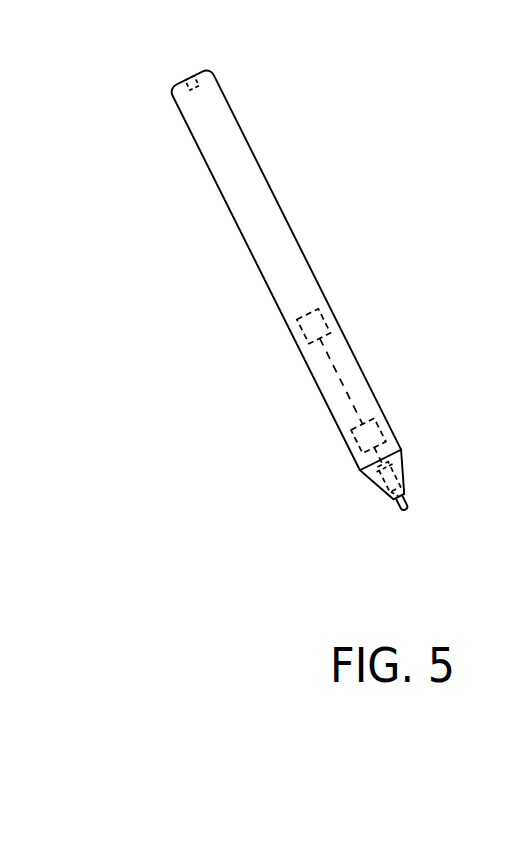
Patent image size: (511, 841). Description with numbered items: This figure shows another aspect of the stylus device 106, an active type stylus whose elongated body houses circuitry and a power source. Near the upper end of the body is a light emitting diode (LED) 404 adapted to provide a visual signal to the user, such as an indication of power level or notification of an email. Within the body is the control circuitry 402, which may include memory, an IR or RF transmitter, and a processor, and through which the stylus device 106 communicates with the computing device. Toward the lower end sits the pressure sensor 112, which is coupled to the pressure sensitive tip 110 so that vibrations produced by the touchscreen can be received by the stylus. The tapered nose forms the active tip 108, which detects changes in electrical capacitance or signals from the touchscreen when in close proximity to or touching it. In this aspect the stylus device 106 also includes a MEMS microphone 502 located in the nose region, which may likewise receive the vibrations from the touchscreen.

The stylus device 106 is at (250, 167).
The active tip 108 is at (404, 465).
The pressure sensitive tip 110 is at (405, 505).
The pressure sensor 112 is at (389, 426).
The control circuitry 402 is at (326, 323).
The light emitting diode (LED) 404 is at (186, 76).
The MEMS microphone 502 is at (372, 470).